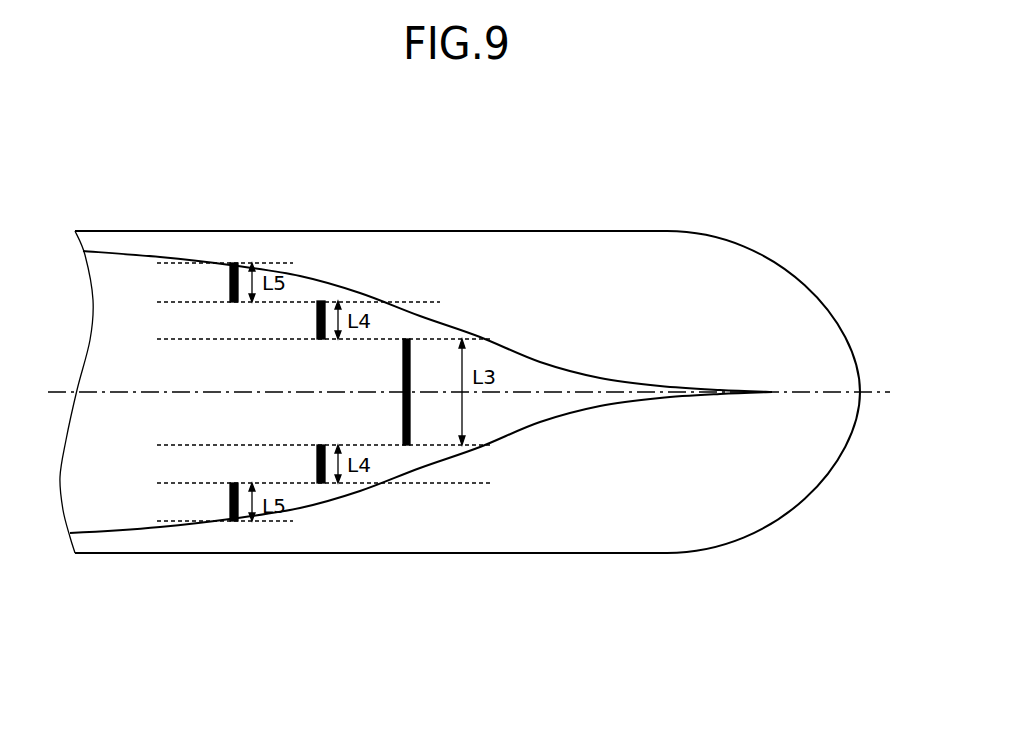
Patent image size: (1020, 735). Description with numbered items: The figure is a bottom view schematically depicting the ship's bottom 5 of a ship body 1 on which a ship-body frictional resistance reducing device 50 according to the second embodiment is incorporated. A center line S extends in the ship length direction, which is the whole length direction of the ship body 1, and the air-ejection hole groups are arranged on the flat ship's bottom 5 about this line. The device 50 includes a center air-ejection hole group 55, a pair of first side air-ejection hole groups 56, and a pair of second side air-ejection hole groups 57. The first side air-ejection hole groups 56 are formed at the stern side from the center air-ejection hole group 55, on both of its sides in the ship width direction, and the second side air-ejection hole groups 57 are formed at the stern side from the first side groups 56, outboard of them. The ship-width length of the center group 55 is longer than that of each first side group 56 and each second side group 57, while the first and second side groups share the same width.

The ship body 1 is at (667, 231).
The ship's bottom 5 is at (547, 423).
The ship-body frictional resistance reducing device 50 is at (365, 283).
The center air-ejection hole group 55 is at (410, 422).
The first side air-ejection hole groups 56 is at (317, 318).
The second side air-ejection hole groups 57 is at (230, 500).
The center line S is at (622, 392).